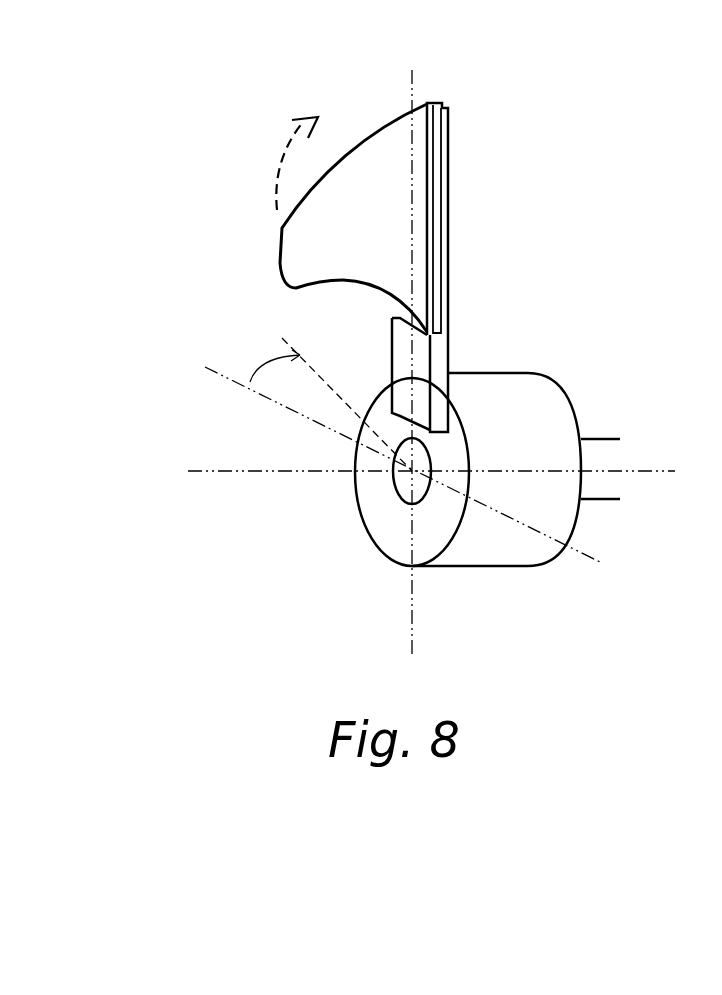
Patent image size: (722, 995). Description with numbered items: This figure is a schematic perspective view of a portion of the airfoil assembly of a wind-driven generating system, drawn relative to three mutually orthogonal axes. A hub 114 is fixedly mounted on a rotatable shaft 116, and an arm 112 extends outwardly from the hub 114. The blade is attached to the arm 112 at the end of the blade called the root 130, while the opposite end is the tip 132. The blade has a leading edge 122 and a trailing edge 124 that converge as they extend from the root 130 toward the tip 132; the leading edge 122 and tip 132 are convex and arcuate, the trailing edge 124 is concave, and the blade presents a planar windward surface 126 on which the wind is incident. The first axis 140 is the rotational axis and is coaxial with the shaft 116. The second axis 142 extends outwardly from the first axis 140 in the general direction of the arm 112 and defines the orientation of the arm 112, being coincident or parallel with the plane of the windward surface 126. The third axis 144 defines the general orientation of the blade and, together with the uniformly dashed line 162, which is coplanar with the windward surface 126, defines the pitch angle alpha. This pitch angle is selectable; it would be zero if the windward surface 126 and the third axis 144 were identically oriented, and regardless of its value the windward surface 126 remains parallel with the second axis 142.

The arm 112 is at (438, 357).
The hub 114 is at (532, 393).
The rotatable shaft 116 is at (605, 479).
The leading edge 122 is at (367, 133).
The trailing edge 124 is at (350, 282).
The windward surface 126 is at (297, 262).
The root 130 is at (430, 238).
The tip 132 is at (275, 240).
The first axis 140 is at (258, 473).
The second axis 142 is at (412, 593).
The third axis 144 is at (275, 400).
The uniformly dashed line 162 is at (282, 340).